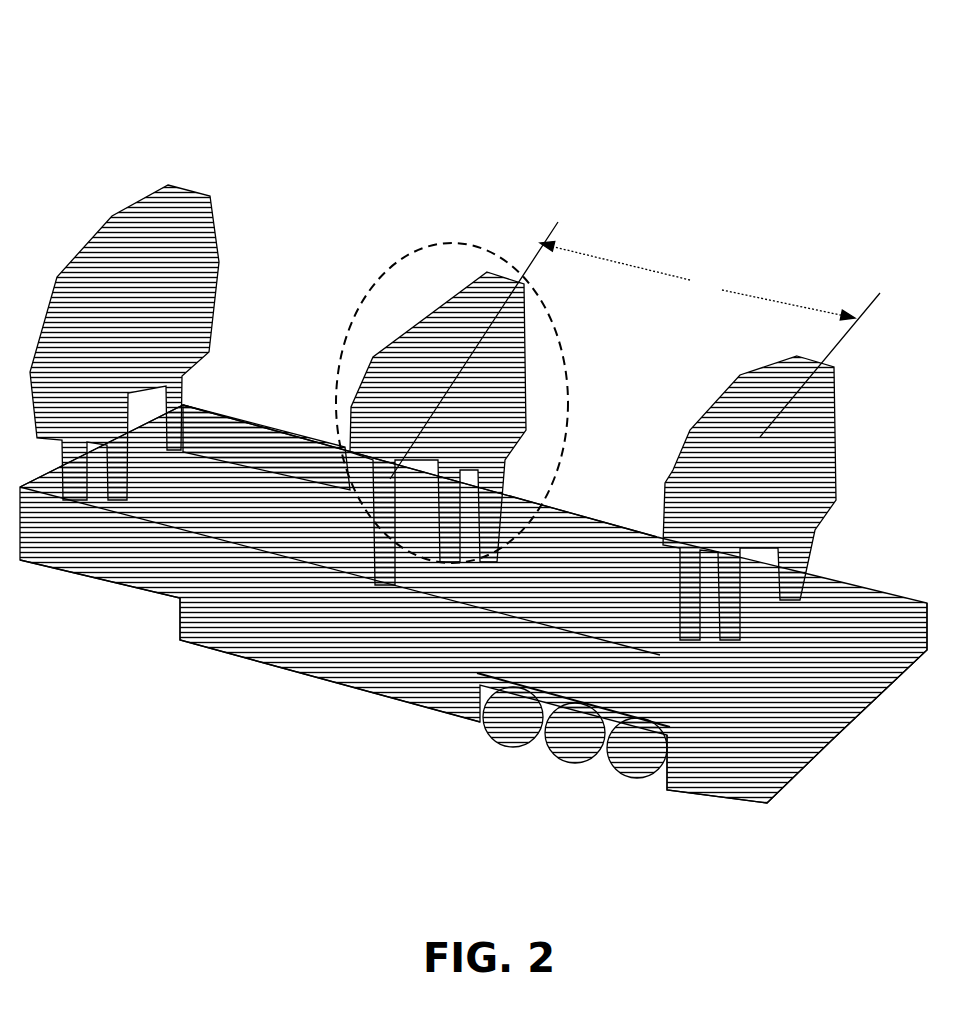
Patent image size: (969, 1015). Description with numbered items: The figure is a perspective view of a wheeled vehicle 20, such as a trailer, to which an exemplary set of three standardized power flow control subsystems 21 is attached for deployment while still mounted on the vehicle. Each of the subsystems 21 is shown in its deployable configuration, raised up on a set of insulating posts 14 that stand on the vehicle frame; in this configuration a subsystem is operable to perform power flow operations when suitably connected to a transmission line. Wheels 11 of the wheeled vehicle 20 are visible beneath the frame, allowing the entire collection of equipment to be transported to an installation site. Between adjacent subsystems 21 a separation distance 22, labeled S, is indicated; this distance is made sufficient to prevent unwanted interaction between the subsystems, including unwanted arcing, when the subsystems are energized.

The wheeled vehicle 20 is at (298, 101).
The power flow control subsystem 21 is at (427, 247).
The separation distance 22 is at (718, 270).
The insulation post 14 is at (513, 494).
The wheels 11 is at (490, 735).